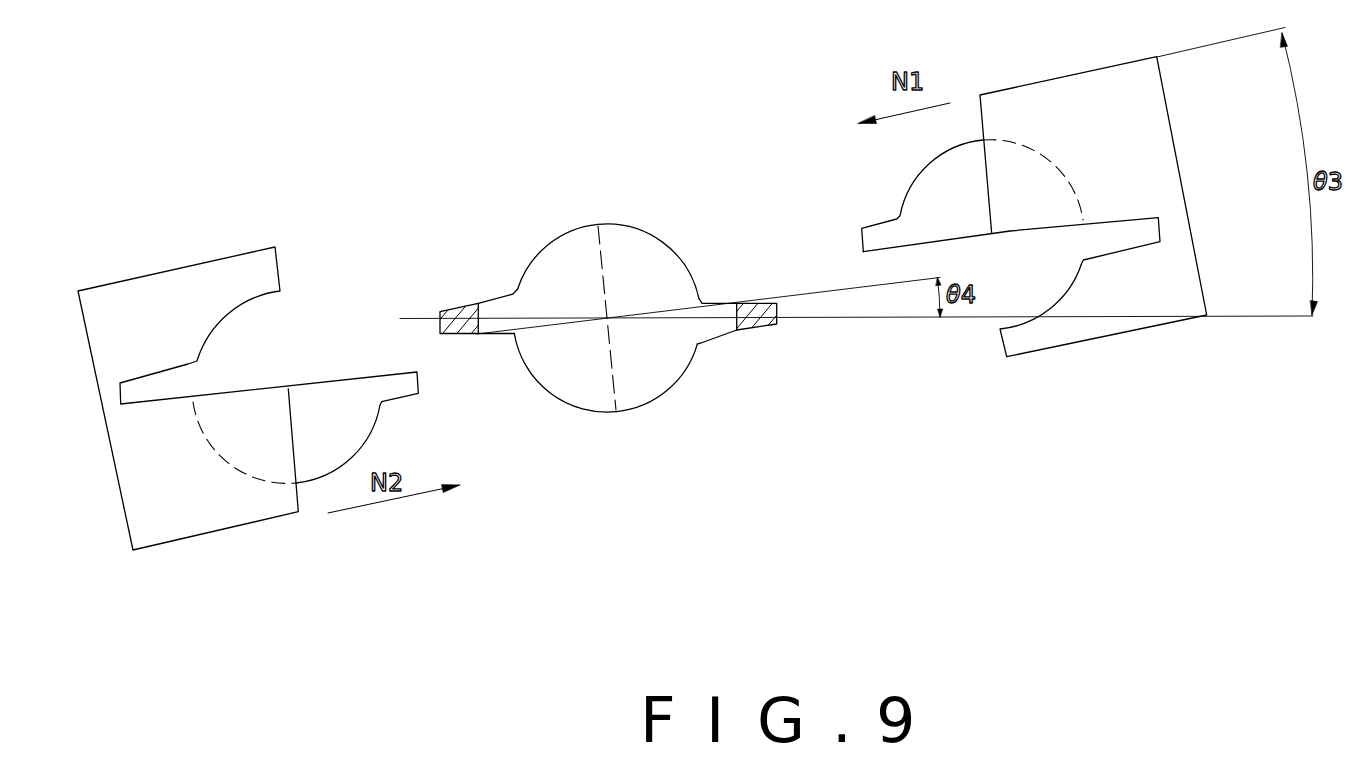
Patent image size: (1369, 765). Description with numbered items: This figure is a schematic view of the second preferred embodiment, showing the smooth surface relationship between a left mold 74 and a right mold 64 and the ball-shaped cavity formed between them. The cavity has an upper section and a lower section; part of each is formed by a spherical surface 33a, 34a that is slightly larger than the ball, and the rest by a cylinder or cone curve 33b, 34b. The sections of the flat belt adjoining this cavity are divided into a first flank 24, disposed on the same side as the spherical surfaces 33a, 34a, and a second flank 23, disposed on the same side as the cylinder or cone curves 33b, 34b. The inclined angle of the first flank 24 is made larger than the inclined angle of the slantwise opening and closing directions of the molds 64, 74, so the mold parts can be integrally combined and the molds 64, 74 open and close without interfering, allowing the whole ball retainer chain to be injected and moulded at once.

The second flank 23 is at (479, 336).
The first flank 24 is at (478, 304).
The spherical surface 33a is at (555, 280).
The cylinder or cone curve 33b is at (647, 275).
The spherical surface 34a is at (660, 367).
The cylinder or cone curve 34b is at (577, 390).
The mold 64 is at (1117, 247).
The mold 74 is at (186, 364).